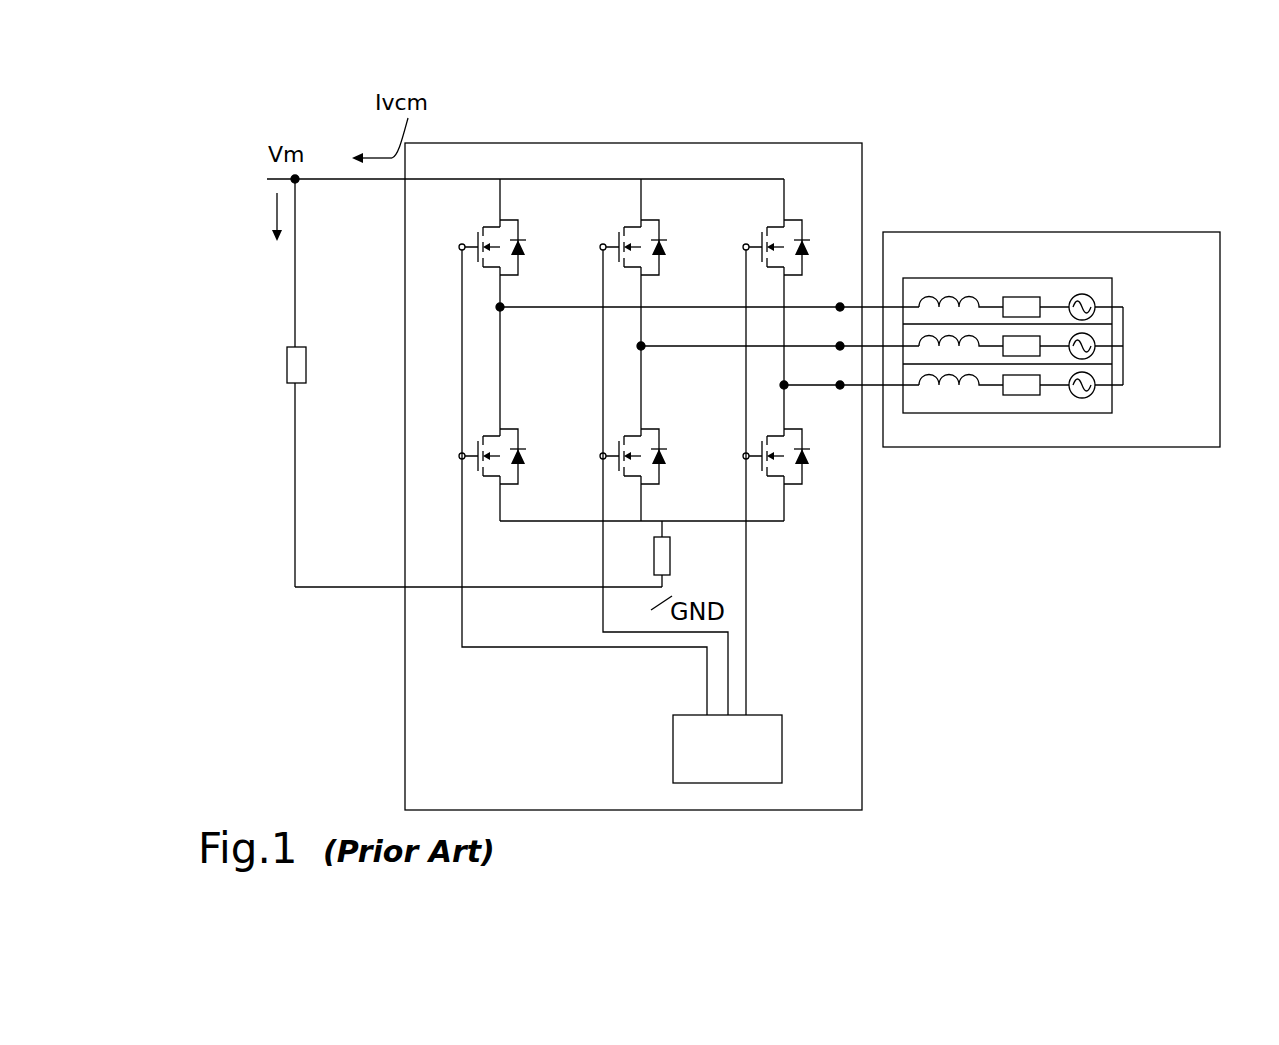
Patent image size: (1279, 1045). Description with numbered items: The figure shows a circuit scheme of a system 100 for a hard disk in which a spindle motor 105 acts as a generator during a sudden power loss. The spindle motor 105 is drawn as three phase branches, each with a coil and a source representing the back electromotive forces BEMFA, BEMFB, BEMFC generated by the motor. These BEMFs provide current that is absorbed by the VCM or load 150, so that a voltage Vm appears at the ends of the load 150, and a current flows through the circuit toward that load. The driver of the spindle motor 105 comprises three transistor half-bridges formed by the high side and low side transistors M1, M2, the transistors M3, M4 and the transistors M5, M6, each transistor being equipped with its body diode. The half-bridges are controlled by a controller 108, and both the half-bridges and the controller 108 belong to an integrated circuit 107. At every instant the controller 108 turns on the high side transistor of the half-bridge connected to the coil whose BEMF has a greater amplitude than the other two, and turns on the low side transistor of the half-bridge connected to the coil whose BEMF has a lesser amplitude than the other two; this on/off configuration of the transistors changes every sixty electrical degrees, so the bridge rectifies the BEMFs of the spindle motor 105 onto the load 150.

The system 100 is at (1030, 599).
The spindle motor 105 is at (1038, 229).
The integrated circuit 107 is at (873, 714).
The controller 108 is at (761, 714).
The VCM or load 150 is at (308, 370).
The high side transistor M1 is at (510, 213).
The low side transistor M2 is at (514, 426).
The high side transistor M3 is at (653, 212).
The low side transistor M4 is at (656, 426).
The high side transistor M5 is at (794, 212).
The low side transistor M6 is at (799, 488).
The back electromotive force of phase A BEMFA is at (1147, 268).
The back electromotive force of phase B BEMFB is at (1118, 335).
The back electromotive force of phase C BEMFC is at (1117, 416).